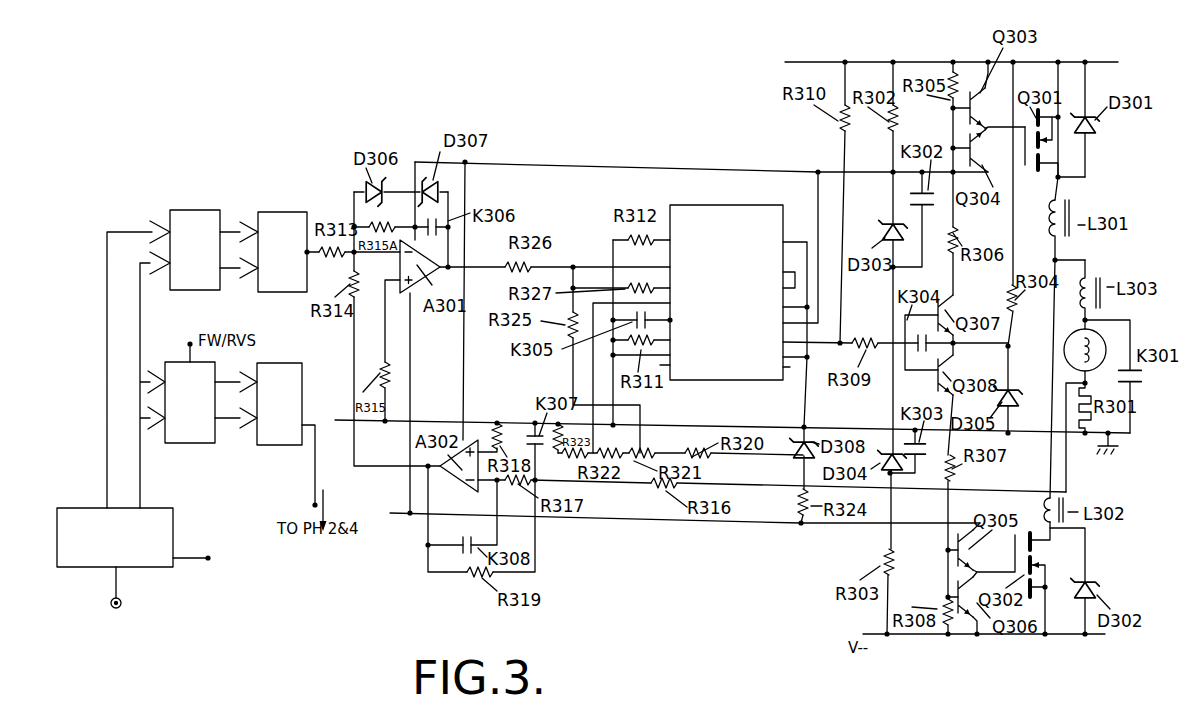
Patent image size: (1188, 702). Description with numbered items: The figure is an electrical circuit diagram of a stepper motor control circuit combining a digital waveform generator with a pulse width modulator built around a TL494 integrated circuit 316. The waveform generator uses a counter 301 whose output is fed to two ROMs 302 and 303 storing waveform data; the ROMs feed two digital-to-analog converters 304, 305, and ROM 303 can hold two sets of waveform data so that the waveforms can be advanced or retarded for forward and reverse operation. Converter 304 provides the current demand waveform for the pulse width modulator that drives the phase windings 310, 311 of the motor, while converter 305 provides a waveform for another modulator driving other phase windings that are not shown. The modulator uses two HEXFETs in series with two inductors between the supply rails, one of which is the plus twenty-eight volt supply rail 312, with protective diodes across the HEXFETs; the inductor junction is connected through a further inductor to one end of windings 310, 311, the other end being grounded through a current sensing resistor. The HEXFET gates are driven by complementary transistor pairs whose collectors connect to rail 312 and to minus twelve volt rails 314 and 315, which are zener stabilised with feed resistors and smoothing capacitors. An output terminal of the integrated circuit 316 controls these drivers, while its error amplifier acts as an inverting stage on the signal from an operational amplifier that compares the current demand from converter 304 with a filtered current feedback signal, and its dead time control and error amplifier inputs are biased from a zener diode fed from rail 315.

The counter 301 is at (83, 567).
The ROM 302 is at (205, 210).
The ROM 303 is at (176, 367).
The digital-to-analog converter 304 is at (296, 211).
The digital-to-analog converter 305 is at (303, 374).
The phase winding 310 is at (1070, 341).
The phase winding 311 is at (1076, 350).
The supply rail 312 is at (1045, 62).
The negative twelve volt rail 314 is at (765, 168).
The negative twelve volt rail 315 is at (822, 527).
The integrated circuit 316 is at (731, 212).